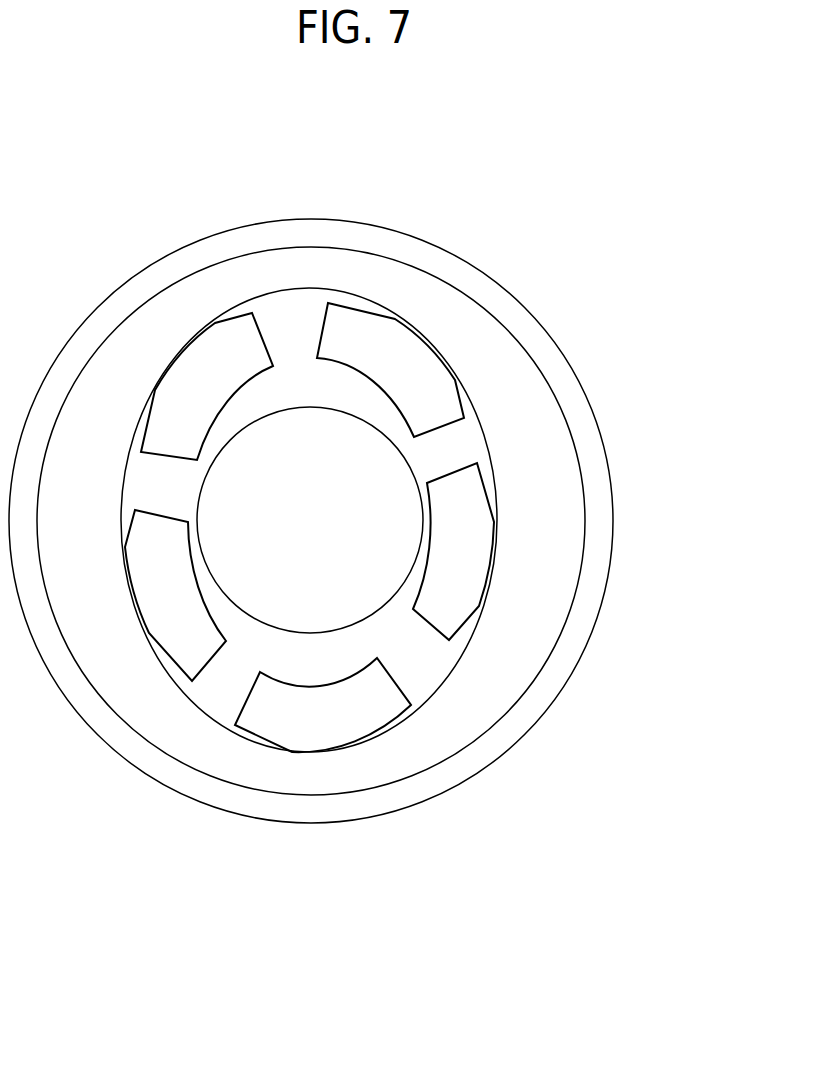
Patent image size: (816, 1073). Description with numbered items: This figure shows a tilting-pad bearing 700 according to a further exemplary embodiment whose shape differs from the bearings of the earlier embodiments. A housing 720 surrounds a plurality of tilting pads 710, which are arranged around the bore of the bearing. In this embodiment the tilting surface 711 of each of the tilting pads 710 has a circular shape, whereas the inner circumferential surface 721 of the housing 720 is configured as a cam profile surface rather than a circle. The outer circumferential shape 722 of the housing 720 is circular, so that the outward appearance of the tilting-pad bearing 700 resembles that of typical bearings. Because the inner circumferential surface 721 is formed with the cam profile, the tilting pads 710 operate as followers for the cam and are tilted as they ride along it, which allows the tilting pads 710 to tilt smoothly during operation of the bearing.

The tilting-pad bearing 700 is at (333, 146).
The tilting pads 710 is at (286, 601).
The tilting surface 711 is at (288, 746).
The housing 720 is at (537, 597).
The inner circumferential surface 721 is at (313, 754).
The outer circumferential shape 722 is at (392, 779).